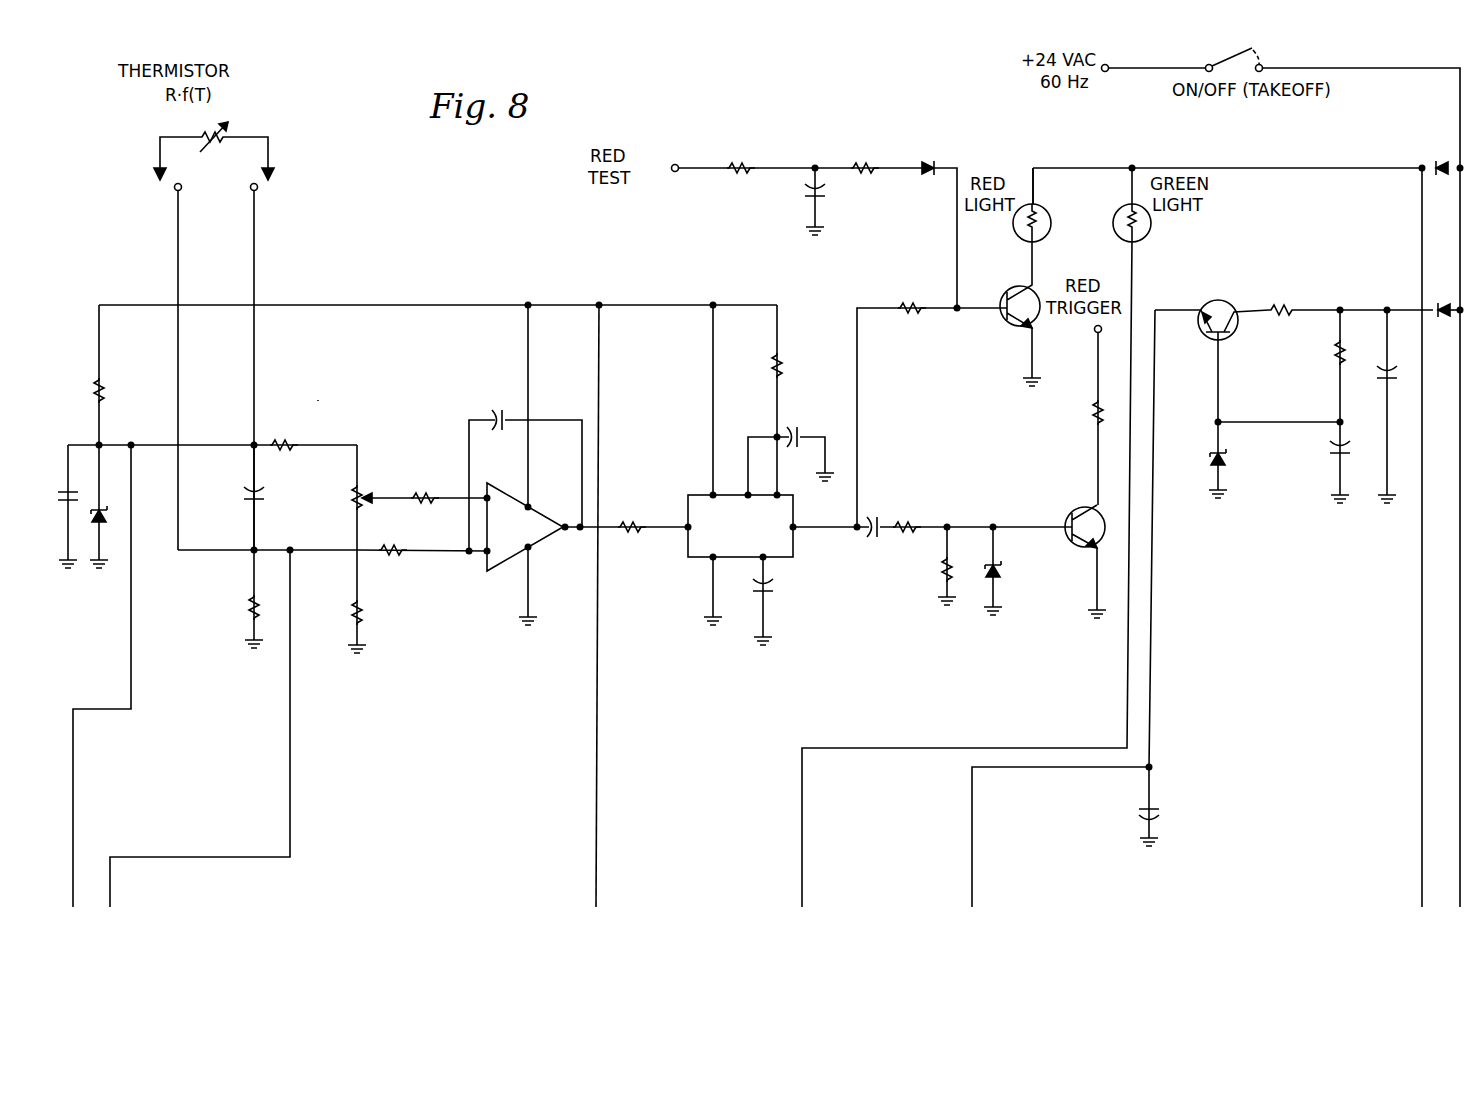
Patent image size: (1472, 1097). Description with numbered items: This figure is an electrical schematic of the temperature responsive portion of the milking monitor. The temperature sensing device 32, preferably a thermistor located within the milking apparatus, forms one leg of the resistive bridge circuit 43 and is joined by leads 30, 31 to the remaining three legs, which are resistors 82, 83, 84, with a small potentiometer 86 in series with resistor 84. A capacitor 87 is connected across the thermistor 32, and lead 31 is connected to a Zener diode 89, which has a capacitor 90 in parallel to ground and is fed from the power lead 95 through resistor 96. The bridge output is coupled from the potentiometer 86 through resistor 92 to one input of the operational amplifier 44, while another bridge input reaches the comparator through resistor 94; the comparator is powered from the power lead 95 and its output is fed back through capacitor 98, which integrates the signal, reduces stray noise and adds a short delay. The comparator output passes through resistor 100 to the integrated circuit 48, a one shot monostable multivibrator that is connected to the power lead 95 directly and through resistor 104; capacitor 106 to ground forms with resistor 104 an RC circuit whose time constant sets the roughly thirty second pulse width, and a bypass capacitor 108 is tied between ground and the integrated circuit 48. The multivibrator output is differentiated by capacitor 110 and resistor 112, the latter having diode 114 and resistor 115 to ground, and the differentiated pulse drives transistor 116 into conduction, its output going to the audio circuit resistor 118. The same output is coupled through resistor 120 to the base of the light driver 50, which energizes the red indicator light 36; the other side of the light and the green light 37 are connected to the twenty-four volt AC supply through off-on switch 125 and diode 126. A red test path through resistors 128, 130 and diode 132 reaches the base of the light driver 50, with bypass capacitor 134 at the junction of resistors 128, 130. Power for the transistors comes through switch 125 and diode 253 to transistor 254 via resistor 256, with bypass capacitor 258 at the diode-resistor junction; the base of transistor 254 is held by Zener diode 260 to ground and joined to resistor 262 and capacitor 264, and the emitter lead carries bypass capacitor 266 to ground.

The lead 30 is at (158, 152).
The lead 31 is at (272, 157).
The temperature sensing device 32 is at (240, 128).
The indicator light 36 is at (1020, 236).
The green light 37 is at (1152, 228).
The resistive bridge circuit 43 is at (318, 405).
The operational amplifier 44 is at (532, 505).
The integrated circuit 48 is at (741, 465).
The light driver 50 is at (1008, 322).
The resistor 82 is at (248, 612).
The resistor 83 is at (296, 440).
The resistor 84 is at (366, 612).
The potentiometer 86 is at (362, 488).
The capacitor 87 is at (270, 486).
The Zener diode 89 is at (113, 508).
The capacitor 90 is at (80, 494).
The resistor 92 is at (438, 492).
The resistor 94 is at (400, 558).
The power lead 95 is at (490, 302).
The resistor 96 is at (104, 388).
The capacitor 98 is at (514, 388).
The resistor 100 is at (650, 510).
The resistor 104 is at (784, 360).
The capacitor 106 is at (800, 424).
The bypass capacitor 108 is at (780, 580).
The capacitor 110 is at (874, 538).
The resistor 112 is at (928, 506).
The diode 114 is at (1003, 572).
The resistor 115 is at (940, 584).
The transistor 116 is at (1066, 512).
The resistor 118 is at (1092, 414).
The resistor 120 is at (930, 294).
The off-on switch 125 is at (1230, 58).
The diode 126 is at (1430, 160).
The resistor 128 is at (746, 160).
The resistor 130 is at (868, 160).
The diode 132 is at (930, 162).
The bypass capacitor 134 is at (828, 192).
The diode 253 is at (1445, 290).
The transistor 254 is at (1222, 300).
The resistor 256 is at (1288, 300).
The bypass capacitor 258 is at (1376, 384).
The Zener diode 260 is at (1210, 462).
The resistor 262 is at (1334, 350).
The capacitor 264 is at (1326, 450).
The bypass capacitor 266 is at (1160, 814).